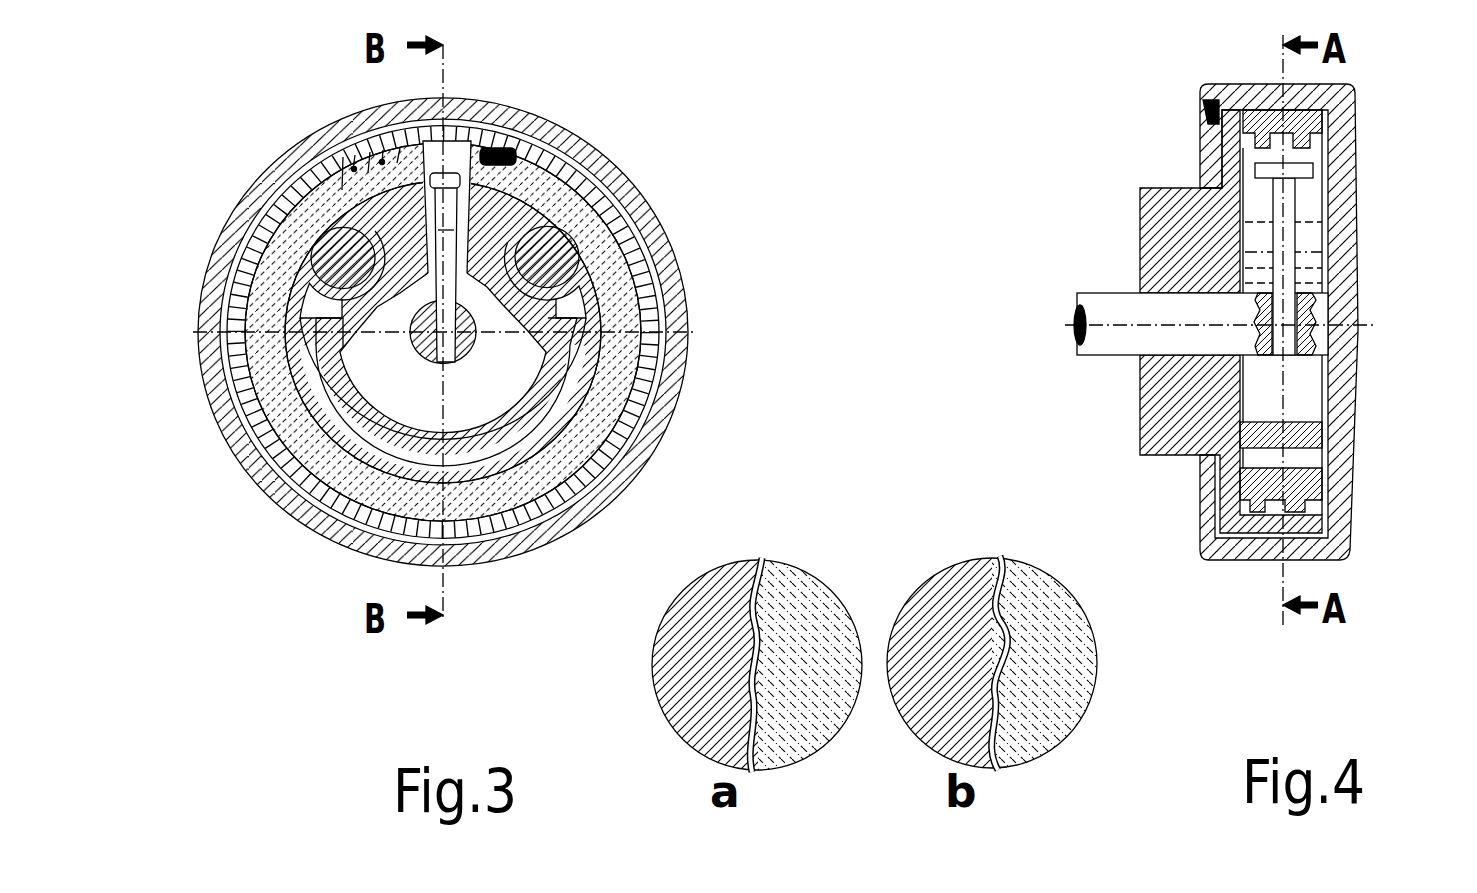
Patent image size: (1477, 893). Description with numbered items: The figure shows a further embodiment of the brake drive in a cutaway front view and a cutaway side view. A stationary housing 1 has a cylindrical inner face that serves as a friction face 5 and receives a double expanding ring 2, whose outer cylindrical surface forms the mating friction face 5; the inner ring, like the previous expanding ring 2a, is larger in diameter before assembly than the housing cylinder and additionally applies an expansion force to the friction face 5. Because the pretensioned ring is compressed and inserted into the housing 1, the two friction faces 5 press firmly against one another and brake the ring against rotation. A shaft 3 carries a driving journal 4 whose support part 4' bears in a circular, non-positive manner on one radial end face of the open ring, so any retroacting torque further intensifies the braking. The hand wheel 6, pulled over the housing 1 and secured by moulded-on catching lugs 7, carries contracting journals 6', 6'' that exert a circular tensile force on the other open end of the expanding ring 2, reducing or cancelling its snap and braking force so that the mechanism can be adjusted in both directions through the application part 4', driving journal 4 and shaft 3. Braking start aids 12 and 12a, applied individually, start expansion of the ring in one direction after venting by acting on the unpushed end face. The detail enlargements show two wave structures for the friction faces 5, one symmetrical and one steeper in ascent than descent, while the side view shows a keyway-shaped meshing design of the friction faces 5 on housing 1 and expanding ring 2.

In FIG. 3, the housing 1 is at (558, 160).
In FIG. 4, the housing 1 is at (1200, 405).
In FIG. 3, the expanding ring 2 is at (968, 608).
In FIG. 3, the expanding ring 2a is at (560, 200).
In FIG. 4, the expanding ring 2a is at (1287, 487).
In FIG. 3, the shaft 3 is at (466, 342).
In FIG. 4, the shaft 3 is at (1117, 308).
In FIG. 3, the driving journal 4 is at (331, 370).
In FIG. 4, the driving journal 4 is at (1355, 249).
In FIG. 4, the support part 4' is at (1340, 137).
In FIG. 3, the friction face 5 is at (992, 663).
In FIG. 4, the friction face 5 is at (1284, 513).
In FIG. 3, the hand wheel 6 is at (414, 332).
In FIG. 4, the hand wheel 6 is at (1317, 322).
In FIG. 3, the contracting journal 6' is at (640, 231).
In FIG. 4, the contracting journal 6' is at (1383, 263).
In FIG. 3, the contracting journal 6'' is at (250, 257).
In FIG. 4, the catching lug 7 is at (1207, 112).
In FIG. 3, the braking start aid 12 is at (403, 153).
In FIG. 3, the braking start aid 12a is at (497, 155).